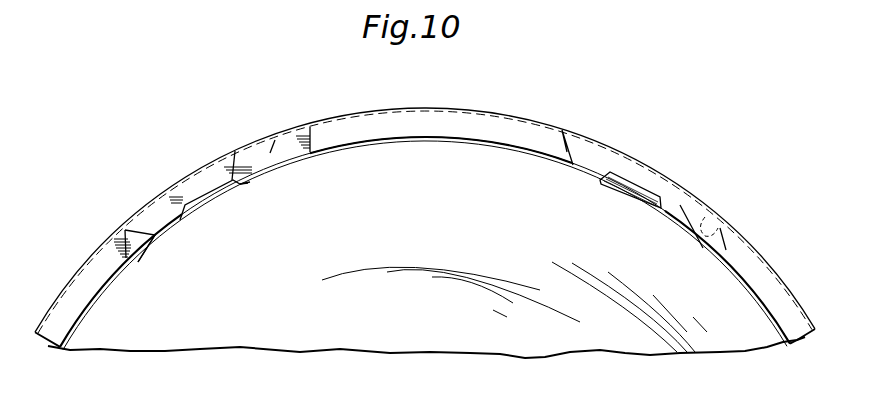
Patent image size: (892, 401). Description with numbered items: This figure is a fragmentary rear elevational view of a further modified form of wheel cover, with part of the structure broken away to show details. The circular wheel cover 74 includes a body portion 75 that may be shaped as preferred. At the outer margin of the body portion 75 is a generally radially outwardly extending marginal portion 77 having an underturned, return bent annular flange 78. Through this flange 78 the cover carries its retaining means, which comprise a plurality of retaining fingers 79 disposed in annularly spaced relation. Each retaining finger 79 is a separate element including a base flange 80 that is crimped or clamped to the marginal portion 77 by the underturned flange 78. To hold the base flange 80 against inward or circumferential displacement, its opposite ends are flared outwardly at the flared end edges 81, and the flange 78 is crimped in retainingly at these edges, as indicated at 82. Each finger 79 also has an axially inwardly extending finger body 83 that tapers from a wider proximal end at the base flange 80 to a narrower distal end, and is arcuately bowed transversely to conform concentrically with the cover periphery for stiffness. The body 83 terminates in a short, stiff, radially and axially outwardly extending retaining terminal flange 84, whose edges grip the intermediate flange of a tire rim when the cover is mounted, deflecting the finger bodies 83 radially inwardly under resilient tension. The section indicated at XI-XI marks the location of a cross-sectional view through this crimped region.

The circular wheel cover 74 is at (187, 161).
The body portion 75 is at (210, 338).
The marginal portion 77 is at (125, 230).
The return bent annular flange 78 is at (75, 292).
The retaining finger 79 is at (209, 213).
The base flange 80 is at (263, 162).
The flared end edge 81 is at (138, 262).
The crimped portion of flange 82 is at (555, 150).
The finger body 83 is at (247, 184).
The retaining terminal flange 84 is at (232, 180).
The section line XI- XI is at (682, 200).